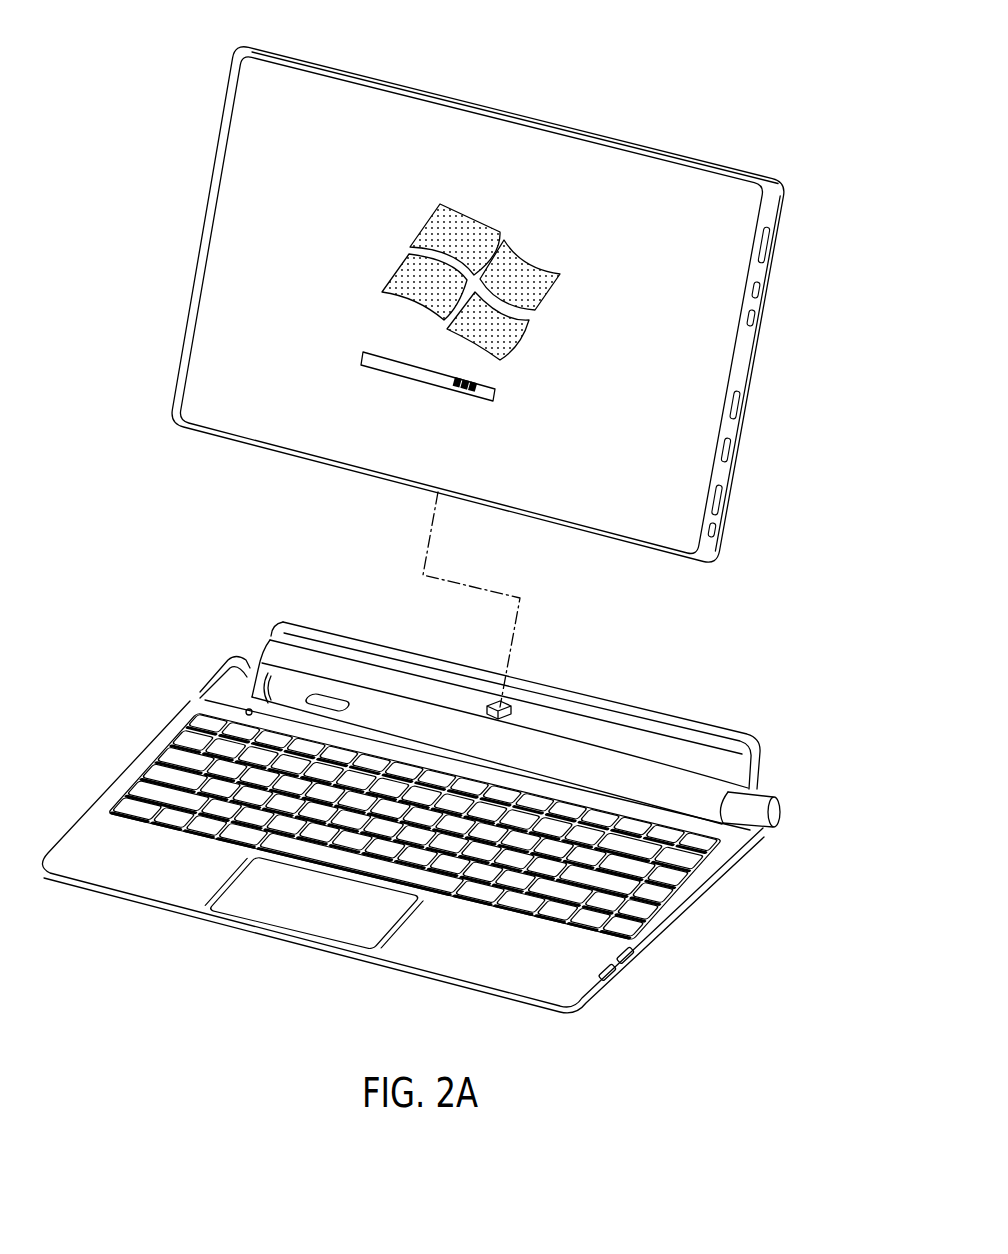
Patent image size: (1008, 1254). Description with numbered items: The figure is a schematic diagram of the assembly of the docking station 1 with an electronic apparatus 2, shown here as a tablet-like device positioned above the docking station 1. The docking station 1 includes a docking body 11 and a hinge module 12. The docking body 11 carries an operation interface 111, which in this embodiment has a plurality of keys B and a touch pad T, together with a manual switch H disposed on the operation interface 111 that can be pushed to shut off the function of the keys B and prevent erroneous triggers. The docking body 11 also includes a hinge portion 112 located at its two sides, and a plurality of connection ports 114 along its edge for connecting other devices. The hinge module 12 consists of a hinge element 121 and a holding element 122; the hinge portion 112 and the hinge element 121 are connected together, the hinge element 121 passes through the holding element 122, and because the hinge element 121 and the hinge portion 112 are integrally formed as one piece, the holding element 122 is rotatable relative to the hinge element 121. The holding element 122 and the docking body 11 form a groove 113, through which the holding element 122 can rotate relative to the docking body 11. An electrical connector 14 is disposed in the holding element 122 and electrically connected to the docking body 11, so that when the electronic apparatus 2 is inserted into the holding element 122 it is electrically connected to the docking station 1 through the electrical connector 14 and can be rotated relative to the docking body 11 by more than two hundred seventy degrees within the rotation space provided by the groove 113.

The docking station 1 is at (412, 758).
The electronic apparatus 2 is at (186, 188).
The docking body 11 is at (163, 878).
The operation interface 111 is at (176, 768).
The hinge portion 112 is at (240, 680).
The groove 113 is at (291, 711).
The connection ports 114 is at (627, 972).
The hinge module 12 is at (517, 724).
The hinge element 121 is at (782, 795).
The holding element 122 is at (683, 790).
The electrical connector 14 is at (496, 704).
The manual switch H is at (244, 712).
The touch pad T is at (287, 910).
The keys B is at (643, 900).